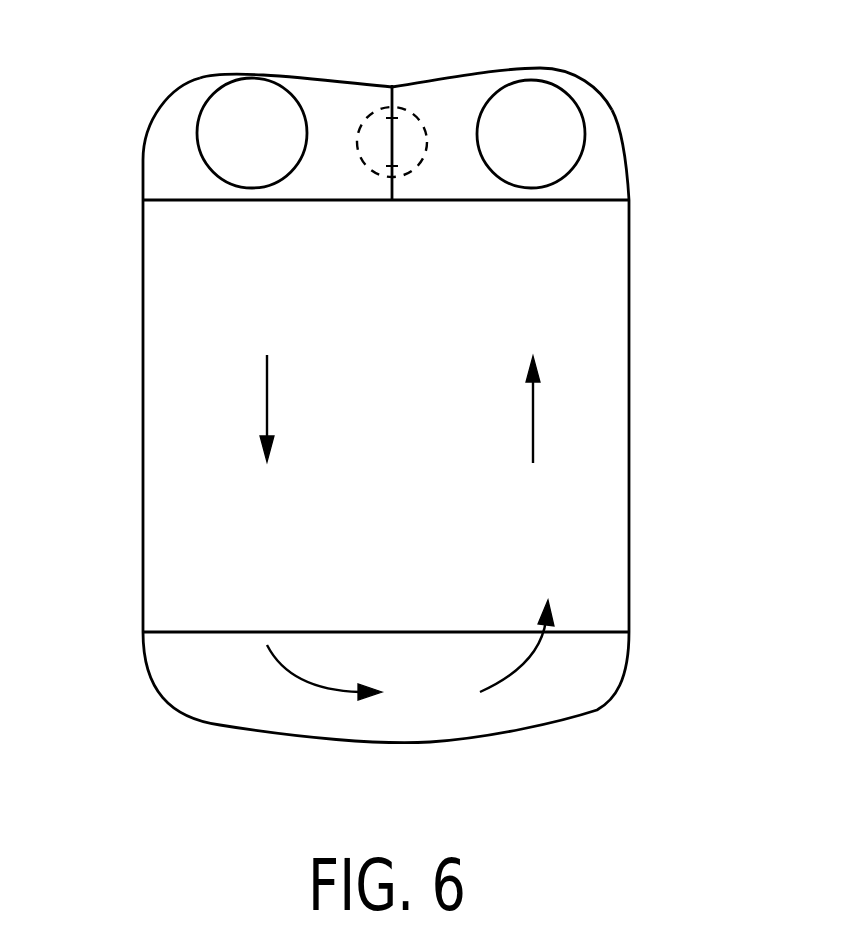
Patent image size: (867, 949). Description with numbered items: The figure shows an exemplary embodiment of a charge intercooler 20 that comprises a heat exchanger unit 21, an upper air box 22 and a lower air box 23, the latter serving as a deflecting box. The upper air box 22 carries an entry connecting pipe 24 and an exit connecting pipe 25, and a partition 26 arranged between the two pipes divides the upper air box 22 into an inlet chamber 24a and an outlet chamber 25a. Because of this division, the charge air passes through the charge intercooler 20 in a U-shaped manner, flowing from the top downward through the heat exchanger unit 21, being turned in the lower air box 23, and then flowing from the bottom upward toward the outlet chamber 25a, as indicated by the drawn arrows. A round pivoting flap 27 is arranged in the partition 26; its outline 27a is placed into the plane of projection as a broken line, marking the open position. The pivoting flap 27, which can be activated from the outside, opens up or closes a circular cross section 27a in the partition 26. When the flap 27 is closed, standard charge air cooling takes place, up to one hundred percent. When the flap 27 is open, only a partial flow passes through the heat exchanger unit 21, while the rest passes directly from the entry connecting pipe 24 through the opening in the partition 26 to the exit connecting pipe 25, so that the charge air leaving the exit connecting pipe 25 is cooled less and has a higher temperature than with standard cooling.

The charge intercooler 20 is at (127, 427).
The heat exchanger unit 21 is at (595, 330).
The upper air box 22 is at (615, 105).
The lower air box 23 is at (538, 707).
The entry connecting pipe 24 is at (252, 97).
The inlet chamber 24a is at (178, 173).
The exit connecting pipe 25 is at (530, 97).
The outlet chamber 25a is at (613, 172).
The partition 26 is at (388, 98).
The pivoting flap 27 is at (388, 143).
The outline of the pivoting flap 27a is at (418, 105).